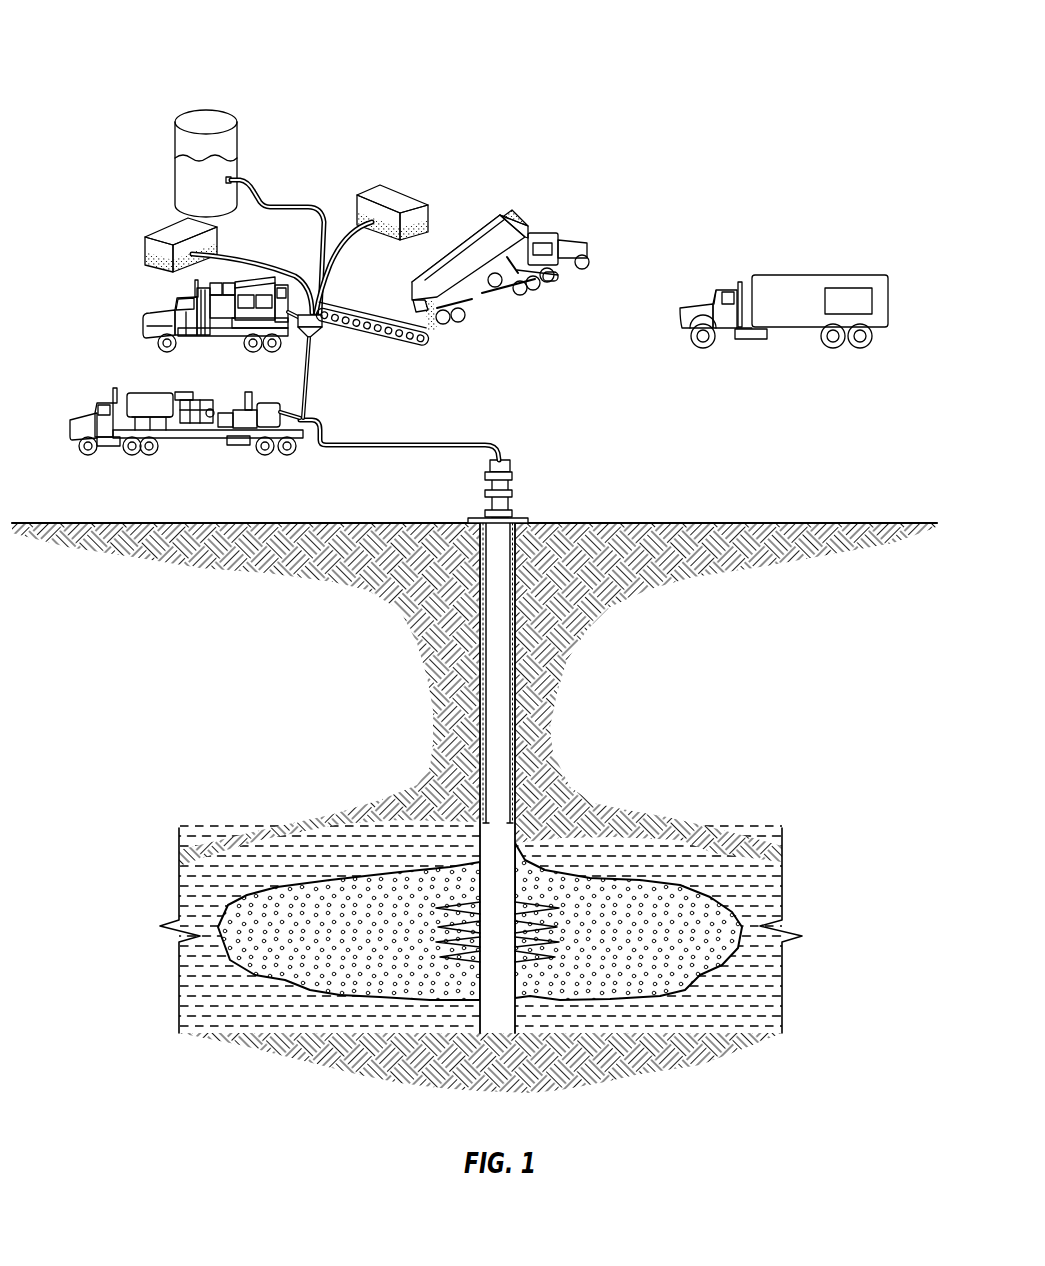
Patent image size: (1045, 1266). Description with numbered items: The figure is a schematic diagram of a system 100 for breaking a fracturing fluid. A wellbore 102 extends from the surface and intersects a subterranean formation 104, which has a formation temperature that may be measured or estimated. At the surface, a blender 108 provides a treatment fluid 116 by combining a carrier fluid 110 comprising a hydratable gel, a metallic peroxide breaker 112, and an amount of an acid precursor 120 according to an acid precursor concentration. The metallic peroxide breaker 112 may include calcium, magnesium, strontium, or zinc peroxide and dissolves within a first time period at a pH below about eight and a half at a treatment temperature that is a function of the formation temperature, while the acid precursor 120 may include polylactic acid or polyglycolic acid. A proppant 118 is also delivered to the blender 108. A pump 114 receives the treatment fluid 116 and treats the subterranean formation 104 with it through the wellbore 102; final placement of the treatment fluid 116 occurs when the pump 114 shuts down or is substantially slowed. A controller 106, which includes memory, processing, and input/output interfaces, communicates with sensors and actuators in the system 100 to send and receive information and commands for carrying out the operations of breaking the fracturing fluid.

The system 100 is at (736, 57).
The wellbore 102 is at (524, 714).
The subterranean formation 104 is at (760, 880).
The controller 106 is at (857, 295).
The blender 108 is at (163, 312).
The carrier fluid 110 is at (176, 162).
The metallic peroxide breaker 112 is at (165, 228).
The pump 114 is at (203, 393).
The treatment fluid 116 is at (312, 380).
The proppant 118 is at (549, 232).
The acid precursor 120 is at (410, 194).